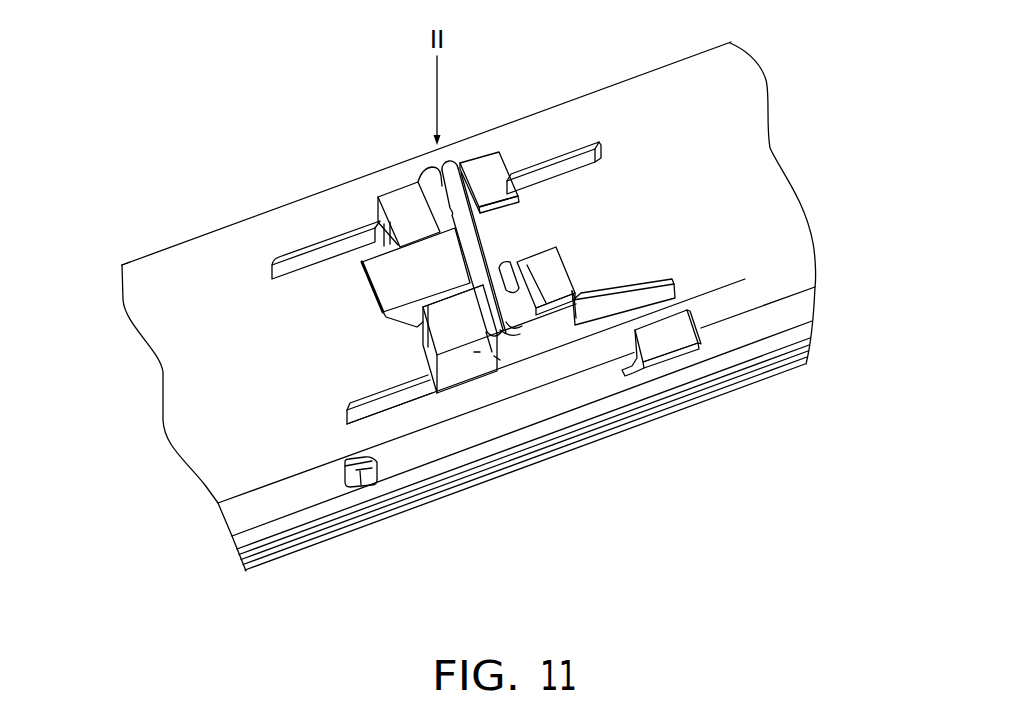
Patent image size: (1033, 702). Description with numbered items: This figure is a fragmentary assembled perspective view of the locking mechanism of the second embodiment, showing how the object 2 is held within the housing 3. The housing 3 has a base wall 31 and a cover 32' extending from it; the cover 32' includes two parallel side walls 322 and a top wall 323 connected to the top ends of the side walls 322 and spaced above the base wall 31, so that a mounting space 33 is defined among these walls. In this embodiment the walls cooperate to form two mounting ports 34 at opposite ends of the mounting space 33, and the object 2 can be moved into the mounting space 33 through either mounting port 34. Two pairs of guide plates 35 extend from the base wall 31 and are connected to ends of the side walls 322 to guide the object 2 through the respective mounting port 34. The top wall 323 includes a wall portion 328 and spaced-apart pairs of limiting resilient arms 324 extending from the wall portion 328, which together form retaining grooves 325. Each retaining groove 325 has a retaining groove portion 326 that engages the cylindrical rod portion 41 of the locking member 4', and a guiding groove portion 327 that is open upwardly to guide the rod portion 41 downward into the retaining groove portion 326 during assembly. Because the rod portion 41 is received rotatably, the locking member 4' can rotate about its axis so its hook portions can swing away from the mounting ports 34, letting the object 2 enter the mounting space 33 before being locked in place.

The object 2 is at (433, 337).
The housing 3 is at (152, 235).
The locking member 4' is at (401, 221).
The base wall 31 is at (650, 82).
The cover 32' is at (582, 428).
The mounting space 33 is at (367, 235).
The mounting port 34 is at (529, 192).
The guide plates 35 is at (360, 240).
The rod portion 41 is at (478, 248).
The side walls 322 is at (497, 360).
The top wall 323 is at (581, 292).
The limiting resilient arms 324 is at (540, 350).
The retaining groove 325 is at (490, 365).
The retaining groove portion 326 is at (478, 352).
The guiding groove portion 327 is at (535, 255).
The wall portion 328 is at (545, 290).